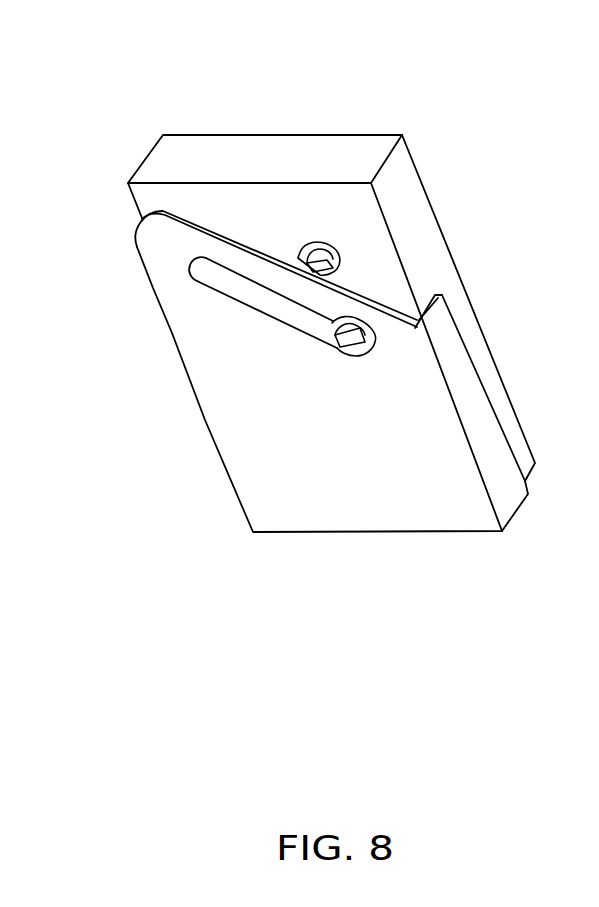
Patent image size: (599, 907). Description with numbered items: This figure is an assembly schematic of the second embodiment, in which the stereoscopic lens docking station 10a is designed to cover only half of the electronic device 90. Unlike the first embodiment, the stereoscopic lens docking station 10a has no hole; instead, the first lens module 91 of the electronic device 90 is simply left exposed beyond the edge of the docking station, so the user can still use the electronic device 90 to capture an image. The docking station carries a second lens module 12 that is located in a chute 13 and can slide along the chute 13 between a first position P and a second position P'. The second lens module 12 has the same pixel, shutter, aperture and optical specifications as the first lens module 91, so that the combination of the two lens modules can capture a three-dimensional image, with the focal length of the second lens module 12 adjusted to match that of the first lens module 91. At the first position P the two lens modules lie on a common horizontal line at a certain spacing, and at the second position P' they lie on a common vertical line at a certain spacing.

The electronic device 90 is at (283, 135).
The first lens module 91 is at (340, 268).
The second lens module 12 is at (352, 347).
The chute 13 is at (230, 283).
The stereoscopic lens docking station 10a is at (222, 576).
The first position P is at (218, 269).
The second position P' is at (477, 334).